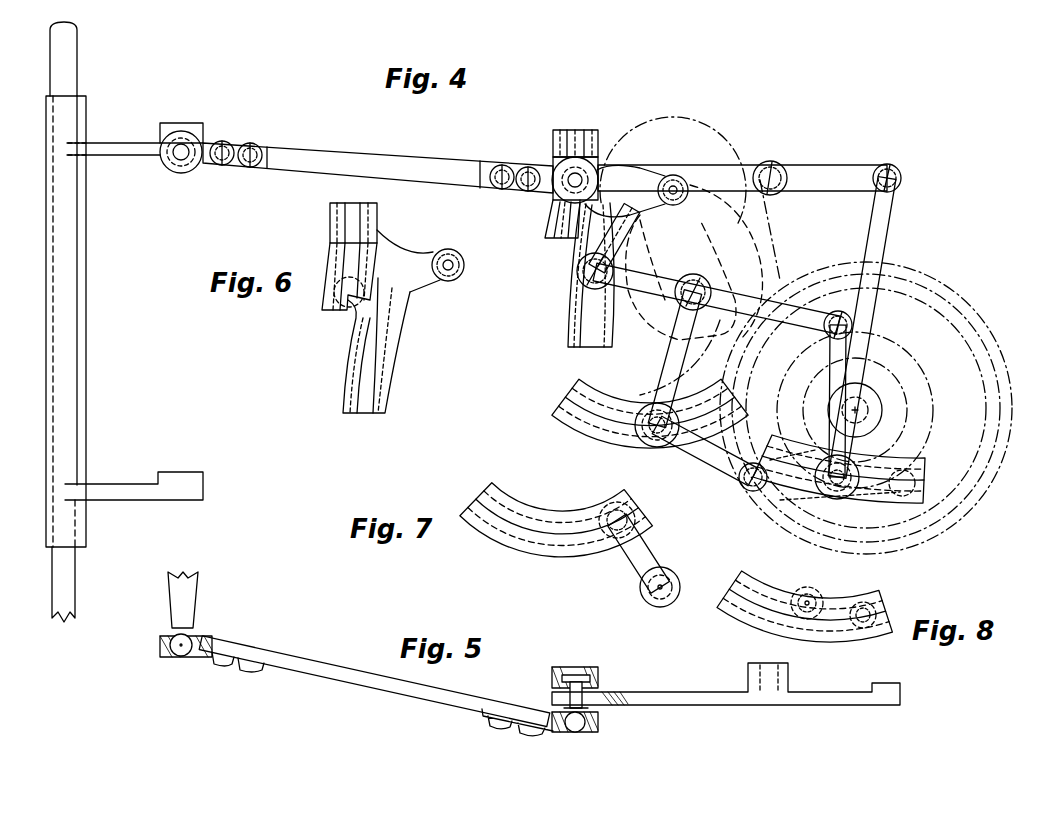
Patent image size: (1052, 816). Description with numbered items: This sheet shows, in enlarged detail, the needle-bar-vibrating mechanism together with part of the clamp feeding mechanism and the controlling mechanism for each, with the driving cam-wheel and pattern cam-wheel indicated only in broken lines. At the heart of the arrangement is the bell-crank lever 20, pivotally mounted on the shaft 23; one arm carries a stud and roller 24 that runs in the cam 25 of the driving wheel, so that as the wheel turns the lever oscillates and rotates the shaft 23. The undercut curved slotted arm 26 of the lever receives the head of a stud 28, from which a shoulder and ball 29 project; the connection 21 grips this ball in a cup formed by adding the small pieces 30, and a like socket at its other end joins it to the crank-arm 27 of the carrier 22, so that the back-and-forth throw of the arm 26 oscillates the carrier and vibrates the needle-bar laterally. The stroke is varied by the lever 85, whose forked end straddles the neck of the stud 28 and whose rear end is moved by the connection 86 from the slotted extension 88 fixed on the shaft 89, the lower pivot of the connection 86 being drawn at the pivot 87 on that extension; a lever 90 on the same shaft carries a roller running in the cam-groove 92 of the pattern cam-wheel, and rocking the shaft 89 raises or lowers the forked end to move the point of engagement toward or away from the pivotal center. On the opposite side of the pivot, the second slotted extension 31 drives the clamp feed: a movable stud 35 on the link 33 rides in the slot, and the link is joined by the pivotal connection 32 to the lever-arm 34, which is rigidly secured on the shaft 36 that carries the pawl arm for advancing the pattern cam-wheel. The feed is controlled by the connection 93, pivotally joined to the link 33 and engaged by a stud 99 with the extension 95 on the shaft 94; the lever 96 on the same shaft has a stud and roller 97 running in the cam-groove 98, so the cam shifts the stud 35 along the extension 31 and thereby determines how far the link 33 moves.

In FIG. 4, the bell-crank lever 20 is at (645, 198).
In FIG. 6, the bell-crank lever 20 is at (418, 256).
In FIG. 4, the connection 21 is at (366, 160).
In FIG. 5, the connection 21 is at (382, 684).
In FIG. 4, the carrier 22 is at (84, 110).
In FIG. 4, the shaft 23 is at (550, 240).
In FIG. 6, the shaft 23 is at (340, 290).
In FIG. 4, the stud and roller 24 is at (683, 198).
In FIG. 6, the stud and roller 24 is at (455, 260).
In FIG. 4, the cam 25 is at (650, 238).
In FIG. 4, the arm 26 is at (554, 143).
In FIG. 6, the arm 26 is at (333, 238).
In FIG. 4, the crank-arm 27 is at (118, 162).
In FIG. 5, the crank-arm 27 is at (193, 602).
In FIG. 5, the stud 28 is at (578, 672).
In FIG. 4, the ball 29 is at (181, 160).
In FIG. 5, the ball 29 is at (180, 658).
In FIG. 5, the small pieces 30 is at (218, 668).
In FIG. 4, the extension 31 is at (567, 322).
In FIG. 6, the extension 31 is at (396, 355).
In FIG. 4, the pivotal connection 32 is at (837, 311).
In FIG. 4, the link 33 is at (766, 303).
In FIG. 4, the lever-arm 34 is at (866, 382).
In FIG. 4, the stud 35 is at (577, 272).
In FIG. 4, the shaft 36 is at (868, 408).
In FIG. 4, the lever 85 is at (726, 165).
In FIG. 5, the lever 85 is at (678, 692).
In FIG. 4, the connection 86 is at (898, 236).
In FIG. 4, the pivot 87 is at (836, 500).
In FIG. 4, the slotted extension 88 is at (880, 506).
In FIG. 8, the slotted extension 88 is at (746, 570).
In FIG. 4, the shaft 89 is at (910, 478).
In FIG. 8, the shaft 89 is at (872, 612).
In FIG. 8, the lever 90 is at (812, 594).
In FIG. 4, the cam-groove 92 is at (920, 434).
In FIG. 4, the connection 93 is at (668, 364).
In FIG. 4, the shaft 94 is at (656, 440).
In FIG. 7, the shaft 94 is at (628, 518).
In FIG. 4, the extension 95 is at (575, 438).
In FIG. 7, the extension 95 is at (518, 502).
In FIG. 4, the lever 96 is at (722, 462).
In FIG. 7, the lever 96 is at (655, 550).
In FIG. 7, the stud and roller 97 is at (660, 598).
In FIG. 4, the cam-groove 98 is at (970, 508).
In FIG. 4, the stud 99 is at (646, 398).